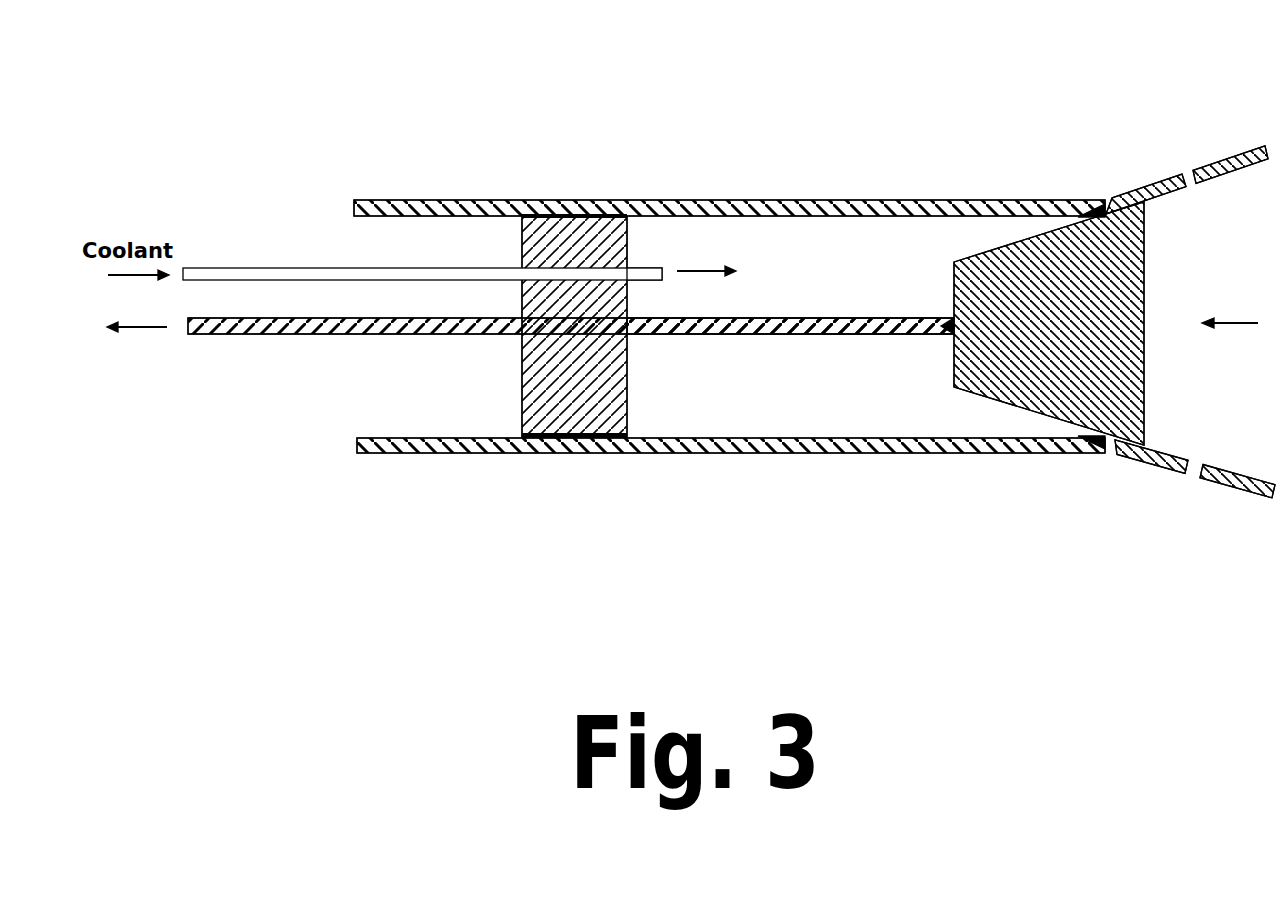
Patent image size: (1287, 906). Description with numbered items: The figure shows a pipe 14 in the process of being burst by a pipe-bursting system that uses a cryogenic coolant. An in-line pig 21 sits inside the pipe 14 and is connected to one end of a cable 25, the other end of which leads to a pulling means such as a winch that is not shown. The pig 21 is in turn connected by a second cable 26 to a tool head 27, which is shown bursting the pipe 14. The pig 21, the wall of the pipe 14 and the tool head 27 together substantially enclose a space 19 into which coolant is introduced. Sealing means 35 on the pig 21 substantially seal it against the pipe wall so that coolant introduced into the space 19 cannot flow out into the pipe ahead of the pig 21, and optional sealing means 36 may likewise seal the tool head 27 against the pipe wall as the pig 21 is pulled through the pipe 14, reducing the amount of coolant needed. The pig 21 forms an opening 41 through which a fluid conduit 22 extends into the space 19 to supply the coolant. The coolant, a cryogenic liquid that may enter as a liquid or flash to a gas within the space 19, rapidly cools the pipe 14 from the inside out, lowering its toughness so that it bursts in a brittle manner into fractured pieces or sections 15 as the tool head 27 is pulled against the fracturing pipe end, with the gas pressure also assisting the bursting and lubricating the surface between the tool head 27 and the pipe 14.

The pipe 14 is at (877, 198).
The fractured pieces or sections 15 is at (1175, 477).
The space 19 is at (910, 283).
The in-line pig 21 is at (593, 217).
The fluid conduit 22 is at (432, 268).
The cable 25 is at (428, 335).
The cable 26 is at (800, 333).
The tool head 27 is at (1015, 407).
The sealing means 35 is at (583, 435).
The sealing means 36 is at (1090, 200).
The opening 41 is at (627, 267).